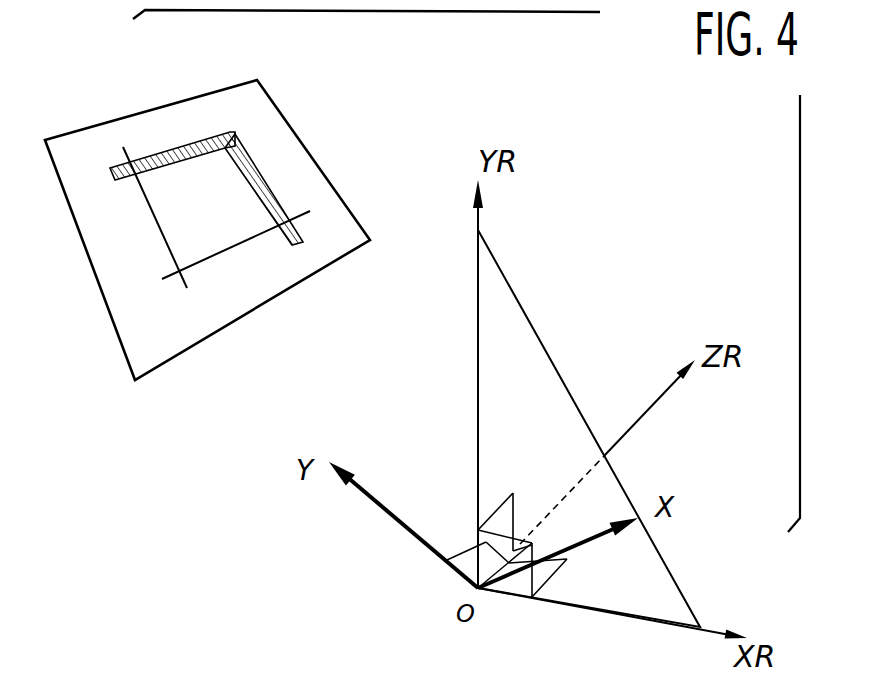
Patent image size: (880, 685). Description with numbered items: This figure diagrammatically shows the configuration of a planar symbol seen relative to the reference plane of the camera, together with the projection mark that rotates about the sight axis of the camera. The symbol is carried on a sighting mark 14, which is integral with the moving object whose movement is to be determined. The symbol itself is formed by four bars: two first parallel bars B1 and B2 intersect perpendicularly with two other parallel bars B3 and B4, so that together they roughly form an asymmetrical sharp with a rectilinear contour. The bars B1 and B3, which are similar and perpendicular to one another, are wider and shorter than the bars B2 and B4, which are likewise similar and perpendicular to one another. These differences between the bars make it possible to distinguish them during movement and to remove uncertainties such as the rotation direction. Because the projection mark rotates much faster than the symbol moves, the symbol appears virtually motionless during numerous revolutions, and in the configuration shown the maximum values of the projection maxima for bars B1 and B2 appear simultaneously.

The sighting mark 14 is at (280, 99).
The first bar B1 is at (173, 146).
The second bar B2 is at (212, 256).
The third bar B3 is at (292, 178).
The fourth bar B4 is at (167, 249).